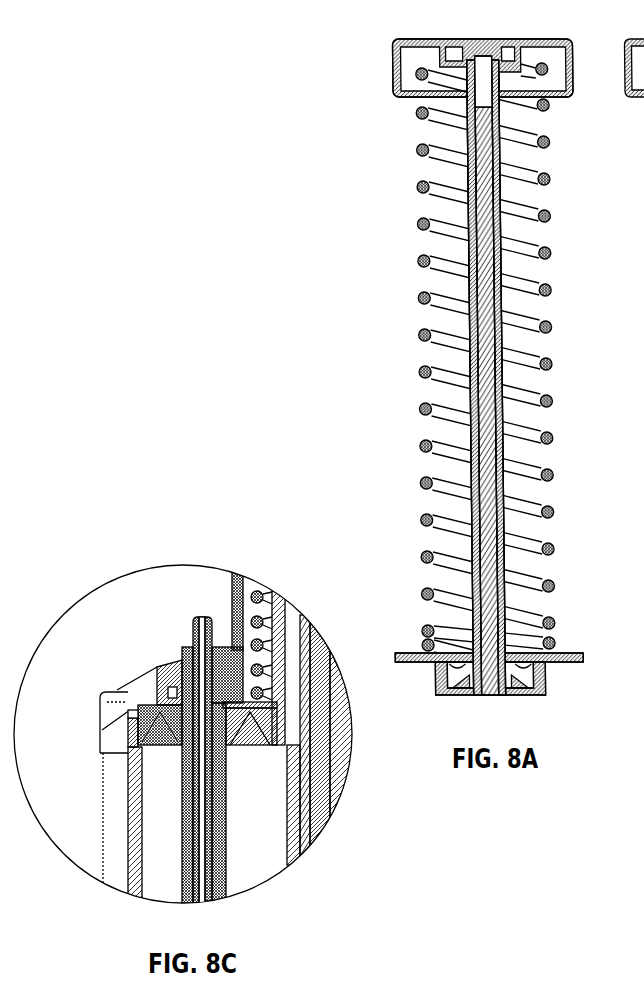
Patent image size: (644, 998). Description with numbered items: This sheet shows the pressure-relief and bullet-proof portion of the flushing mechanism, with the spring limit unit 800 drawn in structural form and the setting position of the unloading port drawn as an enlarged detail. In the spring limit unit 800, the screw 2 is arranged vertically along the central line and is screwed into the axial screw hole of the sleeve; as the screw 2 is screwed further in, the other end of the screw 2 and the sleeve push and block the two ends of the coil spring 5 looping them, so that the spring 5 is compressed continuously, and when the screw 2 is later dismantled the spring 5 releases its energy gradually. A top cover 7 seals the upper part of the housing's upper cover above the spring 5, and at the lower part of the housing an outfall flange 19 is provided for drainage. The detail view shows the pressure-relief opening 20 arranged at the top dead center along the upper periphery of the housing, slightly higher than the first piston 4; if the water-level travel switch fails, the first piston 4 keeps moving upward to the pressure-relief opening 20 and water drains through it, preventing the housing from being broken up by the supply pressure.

In FIG. 8A, the spring assembly 800 is at (336, 128).
In FIG. 8A, the top cover 7 is at (396, 47).
In FIG. 8A, the screw 2 is at (466, 297).
In FIG. 8A, the spring loading the first piston 5 is at (416, 333).
In FIG. 8A, the outfall flange 19 is at (426, 667).
In FIG. 8C, the pressure-relief opening 20 is at (128, 712).
In FIG. 8C, the first piston 4 is at (120, 752).